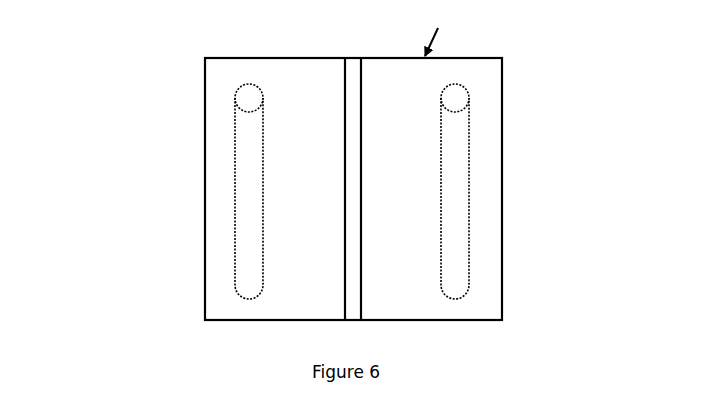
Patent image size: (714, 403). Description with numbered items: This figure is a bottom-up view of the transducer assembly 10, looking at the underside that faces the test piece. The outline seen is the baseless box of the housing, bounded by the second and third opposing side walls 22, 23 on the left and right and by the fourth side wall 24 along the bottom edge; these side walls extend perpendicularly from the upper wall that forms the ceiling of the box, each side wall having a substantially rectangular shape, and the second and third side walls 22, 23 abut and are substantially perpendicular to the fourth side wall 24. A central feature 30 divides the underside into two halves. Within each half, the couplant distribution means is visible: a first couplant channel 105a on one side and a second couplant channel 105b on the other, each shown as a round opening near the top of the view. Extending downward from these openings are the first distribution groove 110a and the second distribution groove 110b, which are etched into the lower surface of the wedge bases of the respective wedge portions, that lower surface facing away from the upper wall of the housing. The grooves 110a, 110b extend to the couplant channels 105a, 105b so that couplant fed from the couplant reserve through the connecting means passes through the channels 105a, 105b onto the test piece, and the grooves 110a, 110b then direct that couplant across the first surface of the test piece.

The transducer assembly 10 is at (158, 44).
The second side wall 22 is at (203, 262).
The third side wall 23 is at (509, 262).
The fourth side wall 24 is at (434, 326).
The fold line / hinge 30 is at (352, 160).
The first couplant channel 105a is at (249, 103).
The second couplant channel 105b is at (455, 103).
The first distribution groove 110a is at (245, 195).
The second distribution groove 110b is at (458, 183).